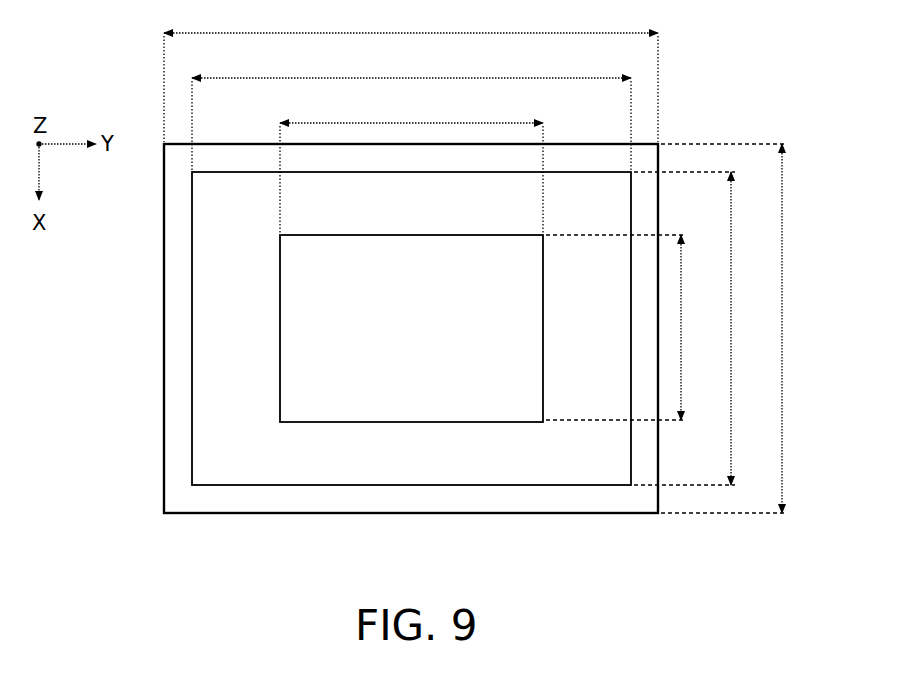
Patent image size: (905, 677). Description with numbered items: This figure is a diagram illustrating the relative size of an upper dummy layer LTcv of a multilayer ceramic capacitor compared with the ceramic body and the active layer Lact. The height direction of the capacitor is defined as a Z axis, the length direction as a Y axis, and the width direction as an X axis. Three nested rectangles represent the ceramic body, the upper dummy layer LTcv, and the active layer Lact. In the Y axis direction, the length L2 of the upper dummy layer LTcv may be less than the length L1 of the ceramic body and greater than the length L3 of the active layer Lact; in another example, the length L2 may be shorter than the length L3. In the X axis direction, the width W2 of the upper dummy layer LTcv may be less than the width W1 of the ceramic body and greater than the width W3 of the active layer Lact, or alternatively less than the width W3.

The upper dummy layer LTcv is at (508, 513).
The active layer Lact is at (360, 422).
The length of the ceramic body L1 is at (411, 22).
The length of the upper dummy layer L2 is at (411, 65).
The length of the active layer L3 is at (411, 110).
The width of the ceramic body W1 is at (801, 328).
The width of the upper dummy layer W2 is at (751, 328).
The width of the active layer W3 is at (700, 327).